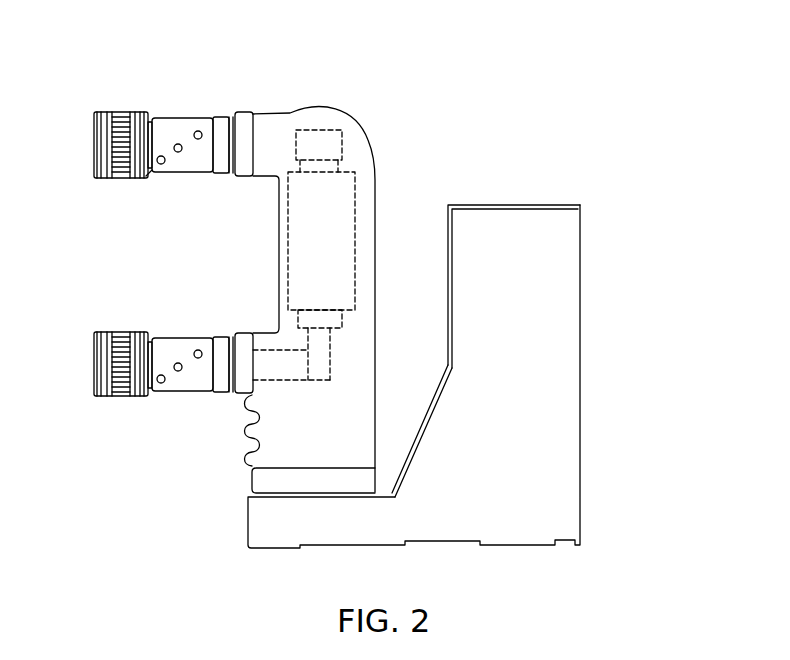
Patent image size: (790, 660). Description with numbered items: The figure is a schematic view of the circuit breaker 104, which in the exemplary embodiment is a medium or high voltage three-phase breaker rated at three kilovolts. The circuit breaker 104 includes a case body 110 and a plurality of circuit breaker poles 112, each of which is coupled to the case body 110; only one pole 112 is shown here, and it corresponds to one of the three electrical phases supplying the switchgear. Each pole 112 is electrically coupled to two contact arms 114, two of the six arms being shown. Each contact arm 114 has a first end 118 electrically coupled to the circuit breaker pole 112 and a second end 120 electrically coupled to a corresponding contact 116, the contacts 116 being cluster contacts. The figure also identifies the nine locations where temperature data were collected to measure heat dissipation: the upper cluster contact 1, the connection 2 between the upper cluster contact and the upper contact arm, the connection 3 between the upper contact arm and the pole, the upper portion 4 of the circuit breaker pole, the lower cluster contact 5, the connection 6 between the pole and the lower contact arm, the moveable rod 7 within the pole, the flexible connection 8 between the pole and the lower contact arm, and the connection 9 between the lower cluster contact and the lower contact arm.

The circuit breaker 104 is at (569, 57).
The circuit breaker pole 112 is at (371, 124).
The case body 110 is at (580, 233).
The upper portion of the circuit breaker pole 4 is at (323, 128).
The moveable rod 7 is at (318, 355).
The flexible connection 8 is at (282, 365).
The contact 116 is at (97, 110).
The upper cluster contact 1 is at (118, 112).
The lower cluster contact 5 is at (118, 330).
The connection between the upper cluster contact and the upper contact arm 2 is at (148, 112).
The connection between the lower cluster contact and the lower contact arm 9 is at (149, 397).
The second end 120 is at (149, 180).
The contact arm 114 is at (187, 109).
The connection between the upper contact arm and the circuit breaker pole 3 is at (220, 113).
The connection between the circuit breaker pole and the lower contact arm 6 is at (225, 323).
The first end 118 is at (239, 126).